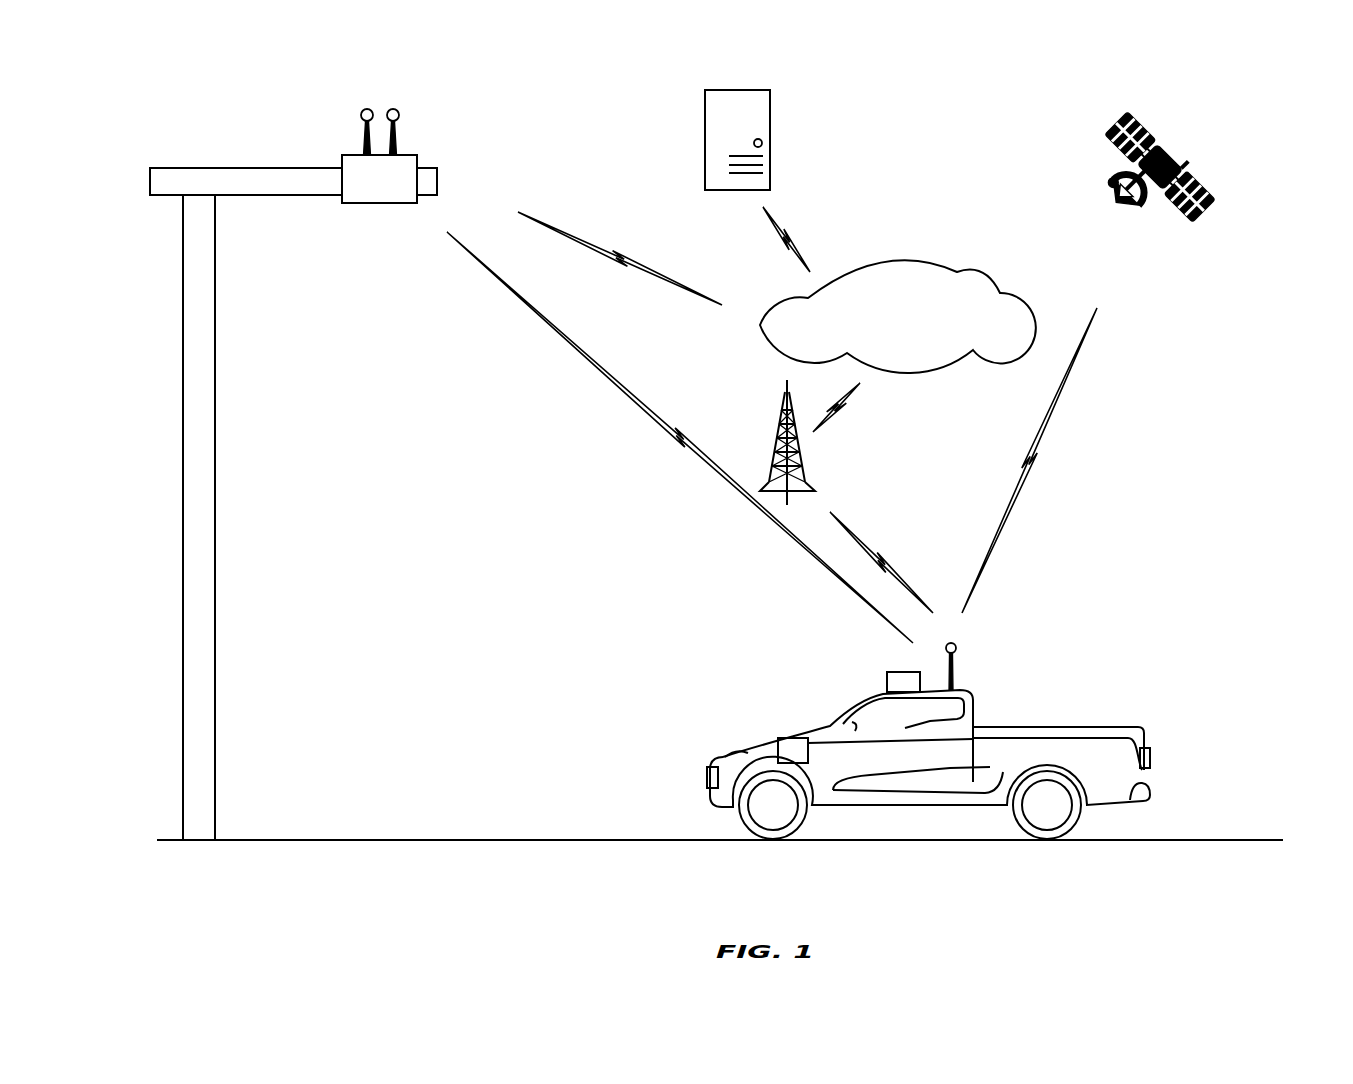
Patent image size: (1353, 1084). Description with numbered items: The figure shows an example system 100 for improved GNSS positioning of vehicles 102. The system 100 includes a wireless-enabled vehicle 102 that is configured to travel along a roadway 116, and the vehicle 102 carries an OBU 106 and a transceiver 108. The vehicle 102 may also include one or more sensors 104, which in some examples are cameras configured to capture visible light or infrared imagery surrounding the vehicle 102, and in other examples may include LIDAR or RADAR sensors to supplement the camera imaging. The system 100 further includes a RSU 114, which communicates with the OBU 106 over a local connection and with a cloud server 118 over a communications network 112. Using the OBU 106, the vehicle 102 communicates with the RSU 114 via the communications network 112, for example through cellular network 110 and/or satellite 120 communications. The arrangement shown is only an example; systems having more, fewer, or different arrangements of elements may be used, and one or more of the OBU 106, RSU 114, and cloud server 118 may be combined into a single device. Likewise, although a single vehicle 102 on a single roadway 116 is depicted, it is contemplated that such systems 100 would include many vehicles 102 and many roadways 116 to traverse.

The system 100 is at (227, 68).
The vehicle 102 is at (1052, 725).
The sensors 104 is at (790, 738).
The OBU 106 is at (887, 682).
The transceiver 108 is at (955, 678).
The cellular network 110 is at (723, 465).
The communications network 112 is at (892, 362).
The RSU 114 is at (413, 154).
The roadway 116 is at (1197, 838).
The cloud server 118 is at (828, 177).
The satellite 120 is at (1133, 296).